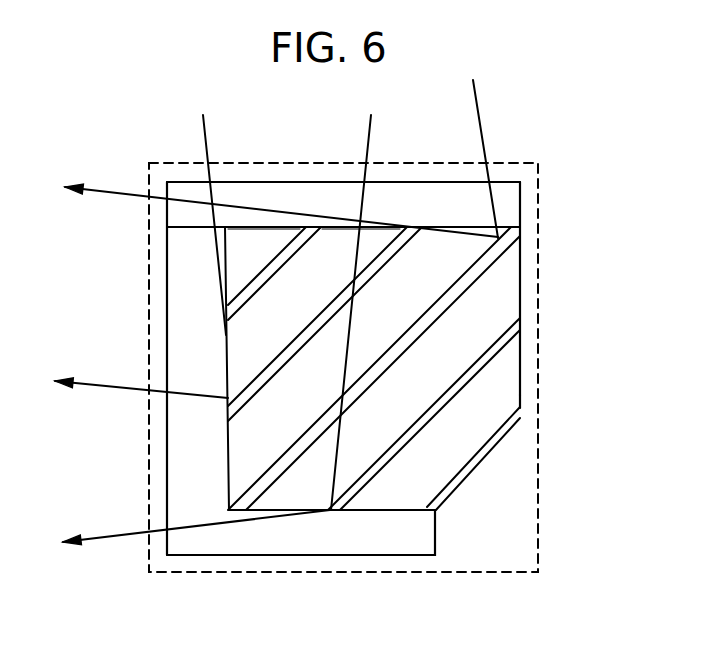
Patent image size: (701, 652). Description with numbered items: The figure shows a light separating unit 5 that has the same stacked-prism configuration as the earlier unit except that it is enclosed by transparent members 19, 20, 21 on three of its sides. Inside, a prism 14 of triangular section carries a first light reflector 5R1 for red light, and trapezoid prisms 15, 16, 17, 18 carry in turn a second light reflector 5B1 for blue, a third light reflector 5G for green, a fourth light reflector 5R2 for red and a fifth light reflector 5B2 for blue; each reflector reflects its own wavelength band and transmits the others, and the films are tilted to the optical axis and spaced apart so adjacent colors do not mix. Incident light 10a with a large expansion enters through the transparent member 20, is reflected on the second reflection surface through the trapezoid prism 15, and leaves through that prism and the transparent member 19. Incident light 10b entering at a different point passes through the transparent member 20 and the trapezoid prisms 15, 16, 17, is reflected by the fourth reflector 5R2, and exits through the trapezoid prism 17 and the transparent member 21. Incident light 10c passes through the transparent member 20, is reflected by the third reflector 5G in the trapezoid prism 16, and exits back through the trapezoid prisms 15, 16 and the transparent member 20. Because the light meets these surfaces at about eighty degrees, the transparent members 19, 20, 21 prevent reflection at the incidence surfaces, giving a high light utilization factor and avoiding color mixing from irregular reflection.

The light separating unit 5 is at (450, 574).
The first light reflector 5R1 is at (270, 277).
The second light reflector 5B1 is at (272, 380).
The third light reflector 5G is at (455, 293).
The fourth light reflector 5R2 is at (457, 387).
The fifth light reflector 5B2 is at (473, 473).
The incident light 10a is at (100, 380).
The incident light 10b is at (100, 532).
The incident light 10c is at (92, 182).
The prism 14 is at (257, 240).
The trapezoid prism 15 is at (335, 240).
The trapezoid prism 16 is at (243, 455).
The trapezoid prism 17 is at (507, 298).
The trapezoid prism 18 is at (504, 397).
The transparent member 19 is at (185, 272).
The transparent member 20 is at (438, 198).
The transparent member 21 is at (277, 545).